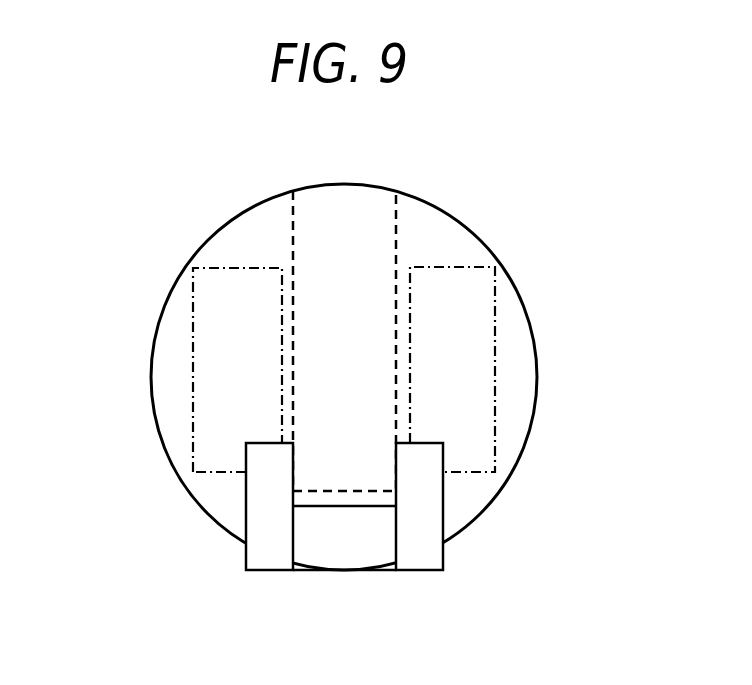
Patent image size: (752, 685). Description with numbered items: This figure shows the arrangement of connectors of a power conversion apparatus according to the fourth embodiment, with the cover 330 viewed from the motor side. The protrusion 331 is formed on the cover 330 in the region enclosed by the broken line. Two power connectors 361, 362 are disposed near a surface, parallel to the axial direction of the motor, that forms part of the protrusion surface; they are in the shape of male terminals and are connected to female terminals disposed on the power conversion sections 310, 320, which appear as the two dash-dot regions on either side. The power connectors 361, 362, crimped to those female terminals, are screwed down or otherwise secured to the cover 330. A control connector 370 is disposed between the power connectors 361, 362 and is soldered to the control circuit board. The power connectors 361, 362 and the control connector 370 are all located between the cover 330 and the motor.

The cover 330 is at (475, 243).
The protrusion 331 is at (397, 237).
The power conversion section 310 is at (205, 310).
The power conversion section 320 is at (488, 350).
The power connector 361 is at (246, 565).
The power connector 362 is at (410, 572).
The control connector 370 is at (342, 555).